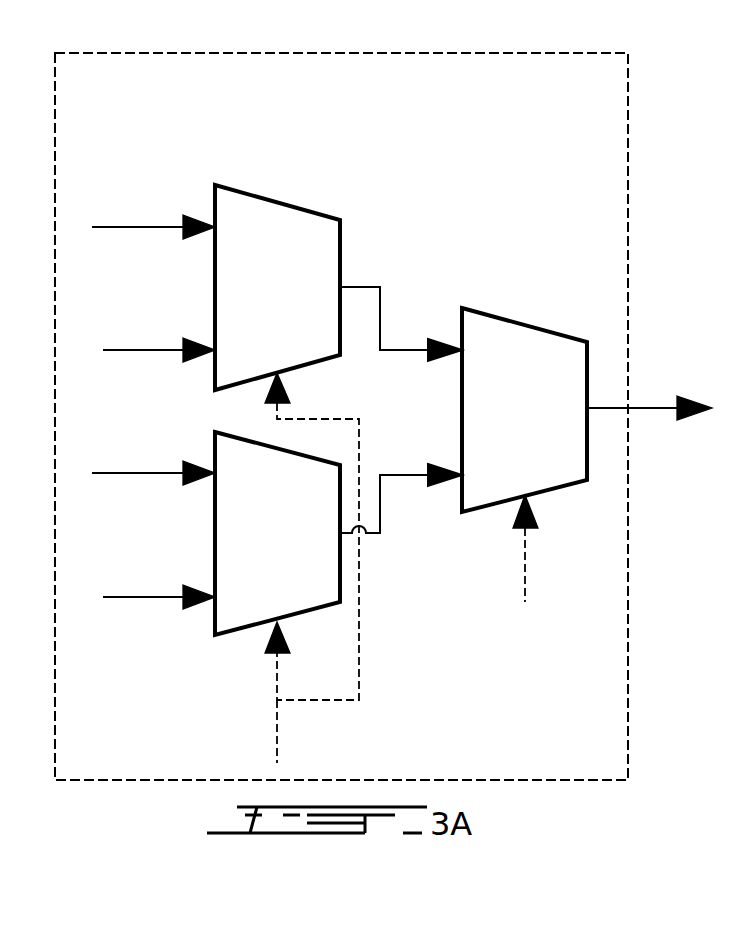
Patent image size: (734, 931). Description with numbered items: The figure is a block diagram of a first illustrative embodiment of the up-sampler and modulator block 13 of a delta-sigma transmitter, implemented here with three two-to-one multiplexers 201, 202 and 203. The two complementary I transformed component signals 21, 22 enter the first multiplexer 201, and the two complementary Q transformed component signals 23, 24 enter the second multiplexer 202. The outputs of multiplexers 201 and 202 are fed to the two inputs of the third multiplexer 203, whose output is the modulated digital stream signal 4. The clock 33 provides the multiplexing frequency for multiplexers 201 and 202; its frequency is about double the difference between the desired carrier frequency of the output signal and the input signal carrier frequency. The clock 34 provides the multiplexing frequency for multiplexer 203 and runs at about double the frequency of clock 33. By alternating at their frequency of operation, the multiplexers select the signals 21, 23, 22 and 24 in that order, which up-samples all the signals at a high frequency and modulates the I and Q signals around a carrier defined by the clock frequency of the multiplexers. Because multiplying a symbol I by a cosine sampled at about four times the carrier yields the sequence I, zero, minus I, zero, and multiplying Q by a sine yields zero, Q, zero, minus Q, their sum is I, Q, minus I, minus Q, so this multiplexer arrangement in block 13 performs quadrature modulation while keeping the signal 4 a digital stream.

The up-sampler and modulator block 13 is at (628, 112).
The 2:1 multiplexer 201 is at (262, 198).
The 2:1 multiplexer 202 is at (215, 625).
The 2:1 multiplexer 203 is at (510, 320).
The signal 21 is at (163, 227).
The signal 22 is at (158, 350).
The signal 23 is at (152, 473).
The signal 24 is at (160, 597).
The modulated digital stream signal 4 is at (652, 408).
The clock 33 is at (277, 727).
The clock 34 is at (525, 577).